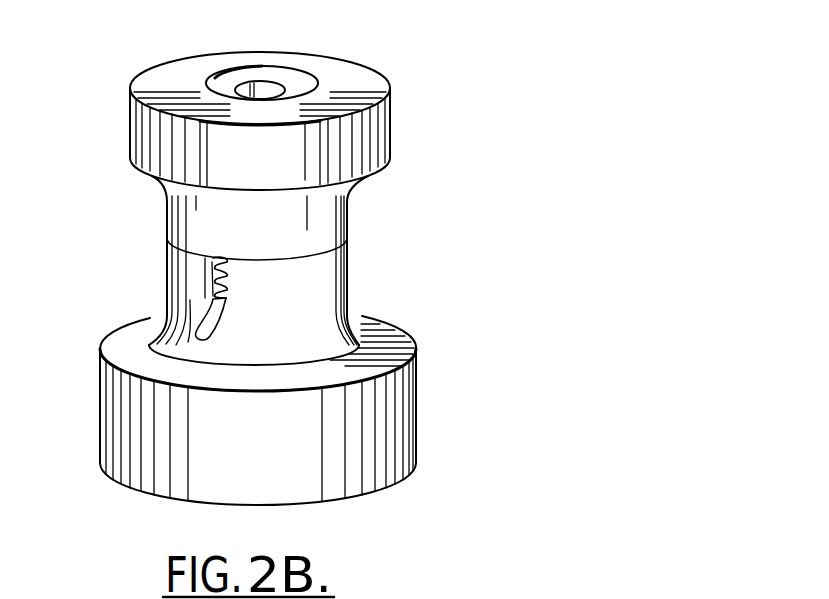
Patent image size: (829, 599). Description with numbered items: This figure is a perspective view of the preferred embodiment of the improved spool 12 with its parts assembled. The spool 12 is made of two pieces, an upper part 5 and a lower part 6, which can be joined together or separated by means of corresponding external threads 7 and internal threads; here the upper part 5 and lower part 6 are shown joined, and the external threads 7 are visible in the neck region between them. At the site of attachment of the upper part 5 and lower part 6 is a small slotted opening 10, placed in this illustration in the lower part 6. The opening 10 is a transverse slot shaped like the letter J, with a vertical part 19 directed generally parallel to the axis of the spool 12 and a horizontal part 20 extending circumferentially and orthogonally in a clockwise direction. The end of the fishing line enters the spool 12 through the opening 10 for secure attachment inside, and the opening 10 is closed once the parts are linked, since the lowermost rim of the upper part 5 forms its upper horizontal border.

The spool 12 is at (455, 52).
The upper part 5 is at (391, 124).
The lower part 6 is at (417, 430).
The external threads 7 is at (219, 258).
The slotted opening 10 is at (226, 297).
The vertical part 19 is at (207, 289).
The horizontal part 20 is at (222, 335).